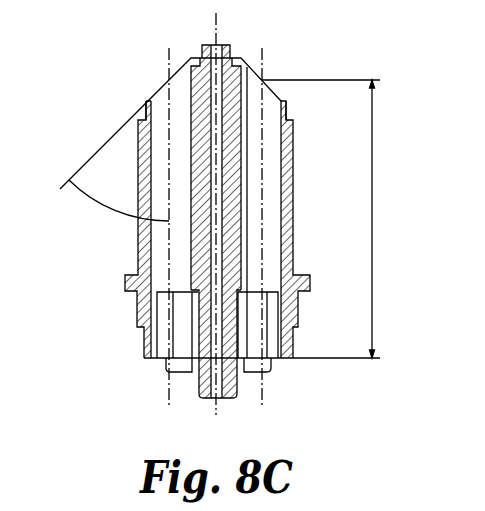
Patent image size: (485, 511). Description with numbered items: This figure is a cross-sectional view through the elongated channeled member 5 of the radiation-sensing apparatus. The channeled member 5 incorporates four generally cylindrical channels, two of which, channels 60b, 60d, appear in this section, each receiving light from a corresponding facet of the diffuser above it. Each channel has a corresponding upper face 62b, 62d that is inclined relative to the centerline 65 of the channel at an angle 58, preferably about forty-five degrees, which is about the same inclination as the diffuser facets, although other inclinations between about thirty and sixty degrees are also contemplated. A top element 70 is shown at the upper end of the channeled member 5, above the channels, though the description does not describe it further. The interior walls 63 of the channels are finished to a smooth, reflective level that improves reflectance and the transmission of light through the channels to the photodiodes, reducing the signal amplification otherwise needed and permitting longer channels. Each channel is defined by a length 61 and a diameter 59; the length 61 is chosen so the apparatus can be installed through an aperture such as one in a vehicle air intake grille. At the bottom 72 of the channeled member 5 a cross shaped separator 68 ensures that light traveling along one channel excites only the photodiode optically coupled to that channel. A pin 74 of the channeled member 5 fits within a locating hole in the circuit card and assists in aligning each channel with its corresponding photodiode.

The channeled member 5 is at (294, 186).
The angle 58 is at (107, 210).
The diameter 59 is at (247, 258).
The channel 60b is at (168, 268).
The channel 60d is at (268, 152).
The length 61 is at (373, 282).
The upper face 62b is at (148, 100).
The upper face 62d is at (283, 97).
The interior walls 63 is at (152, 186).
The centerline 65 is at (263, 63).
The cross shaped separator 68 is at (262, 373).
The top cap 70 is at (230, 52).
The bottom 72 is at (150, 358).
The pin 74 is at (229, 398).